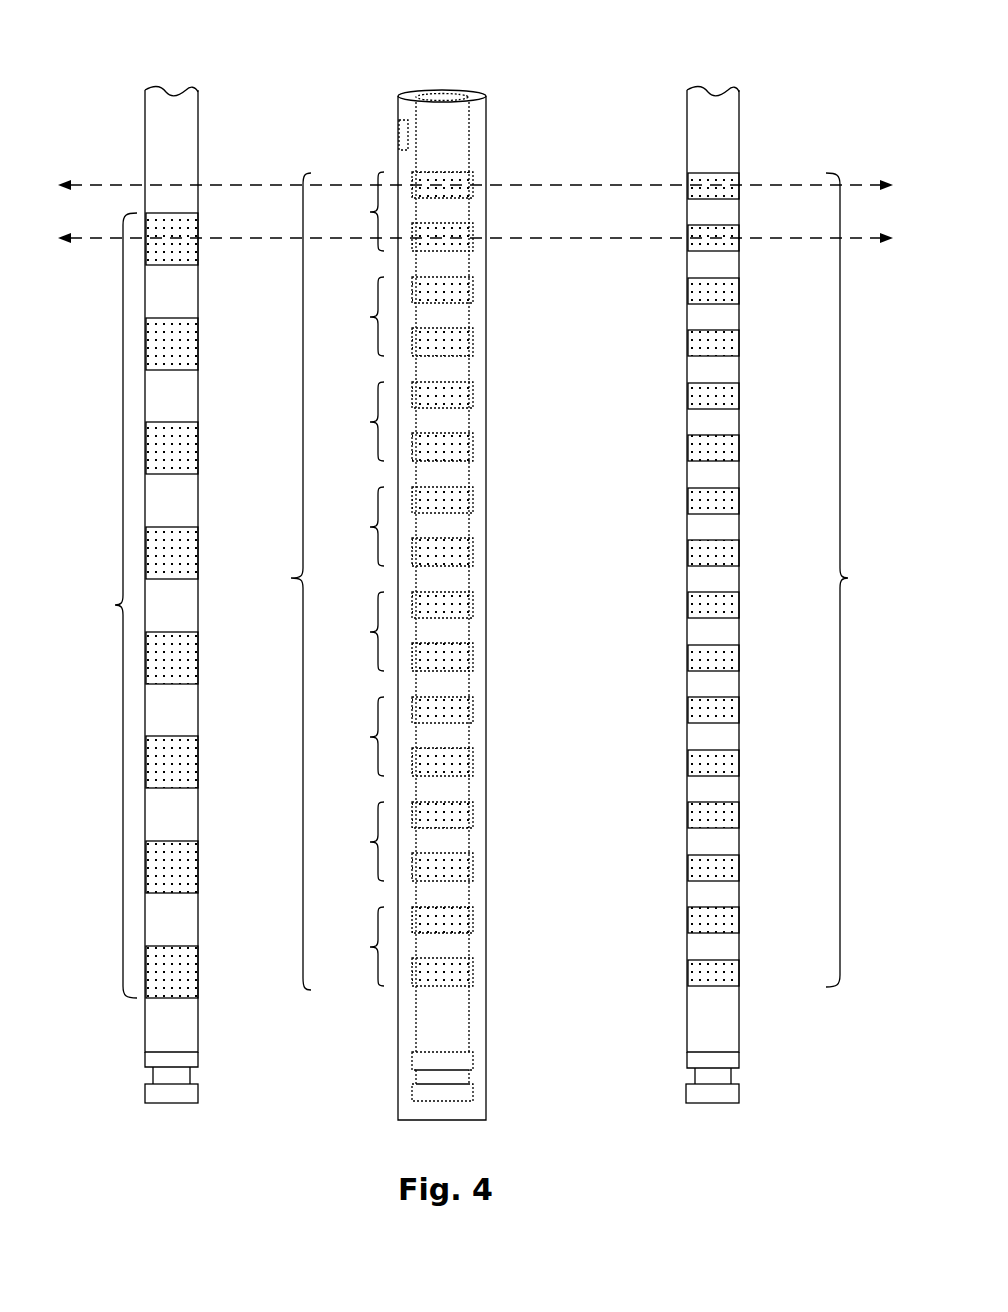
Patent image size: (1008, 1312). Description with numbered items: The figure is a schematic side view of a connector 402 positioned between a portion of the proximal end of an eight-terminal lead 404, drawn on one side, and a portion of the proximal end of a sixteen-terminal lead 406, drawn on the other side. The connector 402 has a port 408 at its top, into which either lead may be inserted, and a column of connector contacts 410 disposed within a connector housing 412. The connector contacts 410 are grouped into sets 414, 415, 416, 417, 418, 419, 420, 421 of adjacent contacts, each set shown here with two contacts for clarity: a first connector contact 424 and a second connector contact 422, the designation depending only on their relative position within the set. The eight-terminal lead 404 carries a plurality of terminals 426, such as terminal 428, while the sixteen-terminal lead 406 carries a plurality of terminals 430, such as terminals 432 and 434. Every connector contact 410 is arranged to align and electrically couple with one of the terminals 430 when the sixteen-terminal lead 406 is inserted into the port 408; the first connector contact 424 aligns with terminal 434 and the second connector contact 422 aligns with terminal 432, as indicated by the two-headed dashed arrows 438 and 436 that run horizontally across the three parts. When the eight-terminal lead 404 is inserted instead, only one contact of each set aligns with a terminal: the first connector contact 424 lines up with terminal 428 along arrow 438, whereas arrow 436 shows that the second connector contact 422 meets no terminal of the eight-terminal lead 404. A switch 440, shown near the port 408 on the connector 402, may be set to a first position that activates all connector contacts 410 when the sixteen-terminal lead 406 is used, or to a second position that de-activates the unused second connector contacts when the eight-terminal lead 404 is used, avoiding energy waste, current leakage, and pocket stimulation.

The connector 402 is at (514, 128).
The eight-terminal lead 404 is at (228, 140).
The sixteen-terminal lead 406 is at (777, 133).
The port 408 is at (445, 78).
The connector contacts 410 is at (401, 581).
The connector housing 412 is at (402, 1040).
The set of connector contacts 414 is at (438, 222).
The set of connector contacts 415 is at (397, 316).
The set of connector contacts 416 is at (397, 421).
The set of connector contacts 417 is at (397, 526).
The set of connector contacts 418 is at (397, 631).
The set of connector contacts 419 is at (397, 736).
The set of connector contacts 420 is at (397, 841).
The set of connector contacts 421 is at (397, 946).
The second connector contact 422 is at (466, 194).
The first connector contact 424 is at (466, 247).
The plurality of terminals 426 is at (172, 605).
The terminal 428 is at (192, 252).
The plurality of terminals 430 is at (798, 580).
The terminal 432 is at (734, 194).
The terminal 434 is at (734, 247).
The two-headed dashed arrow 436 is at (594, 184).
The two-headed dashed arrow 438 is at (628, 242).
The switch 440 is at (398, 132).